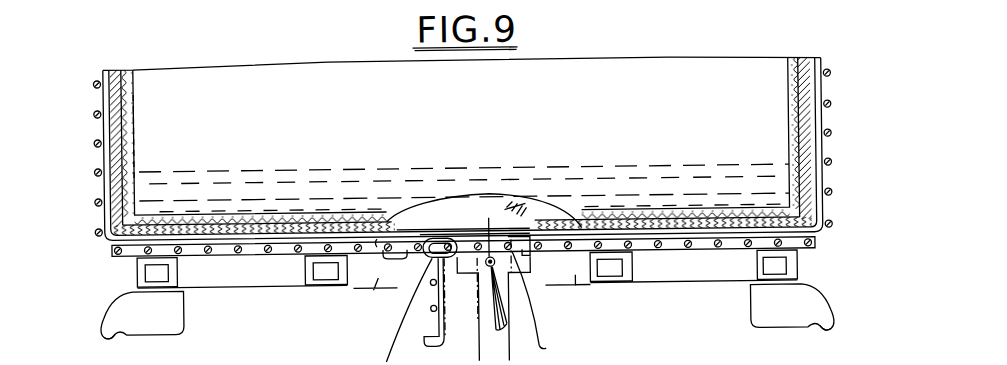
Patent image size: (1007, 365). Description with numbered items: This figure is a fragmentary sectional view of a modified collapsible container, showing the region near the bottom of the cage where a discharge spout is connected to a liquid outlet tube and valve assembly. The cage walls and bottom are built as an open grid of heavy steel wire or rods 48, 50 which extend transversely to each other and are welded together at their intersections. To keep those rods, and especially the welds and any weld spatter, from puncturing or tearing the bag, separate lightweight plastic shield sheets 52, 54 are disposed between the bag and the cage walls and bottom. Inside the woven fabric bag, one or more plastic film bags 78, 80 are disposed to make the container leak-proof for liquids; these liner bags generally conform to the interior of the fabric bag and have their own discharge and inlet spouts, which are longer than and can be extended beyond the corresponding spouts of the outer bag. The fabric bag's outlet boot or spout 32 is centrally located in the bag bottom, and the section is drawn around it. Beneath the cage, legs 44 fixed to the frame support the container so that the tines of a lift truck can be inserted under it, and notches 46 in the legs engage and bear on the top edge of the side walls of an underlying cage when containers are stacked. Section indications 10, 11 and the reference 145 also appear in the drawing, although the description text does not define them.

The section line 10- 10 is at (489, 222).
The section line 11- 11 is at (370, 292).
The outlet boot or spout 32 is at (515, 204).
The legs 44 is at (114, 302).
The notches 46 is at (113, 338).
The rods 48 is at (96, 146).
The rods 50 is at (103, 158).
The sheet 52 is at (113, 189).
The sheet 54 is at (227, 236).
The bag 78 is at (139, 124).
The bag 80 is at (134, 152).
The drain conduit 145 is at (543, 352).